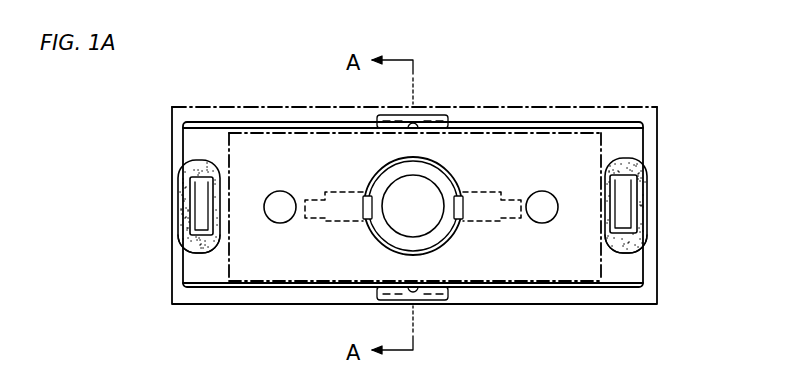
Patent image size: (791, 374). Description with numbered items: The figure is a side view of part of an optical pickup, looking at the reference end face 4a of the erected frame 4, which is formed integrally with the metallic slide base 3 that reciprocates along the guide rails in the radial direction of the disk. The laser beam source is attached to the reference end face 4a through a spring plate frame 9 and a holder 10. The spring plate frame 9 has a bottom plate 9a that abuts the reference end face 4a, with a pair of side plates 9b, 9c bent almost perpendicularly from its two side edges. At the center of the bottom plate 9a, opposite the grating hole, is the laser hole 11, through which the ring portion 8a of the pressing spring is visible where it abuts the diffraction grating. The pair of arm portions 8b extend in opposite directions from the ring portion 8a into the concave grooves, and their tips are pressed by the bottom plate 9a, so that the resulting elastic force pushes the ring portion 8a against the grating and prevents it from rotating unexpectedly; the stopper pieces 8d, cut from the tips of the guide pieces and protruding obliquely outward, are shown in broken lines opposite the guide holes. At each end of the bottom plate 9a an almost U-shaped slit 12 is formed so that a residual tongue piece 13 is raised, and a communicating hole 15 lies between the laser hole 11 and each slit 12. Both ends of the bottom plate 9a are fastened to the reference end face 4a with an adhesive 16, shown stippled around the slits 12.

The slide base 3 is at (534, 104).
The erected frame 4 is at (657, 136).
The reference end face 4a is at (645, 292).
The ring portion 8a is at (385, 246).
The arm portions 8b is at (341, 192).
The stopper pieces 8d is at (308, 200).
The spring plate frame 9 is at (272, 122).
The bottom plate 9a is at (205, 275).
The side plate 9b is at (314, 128).
The side plate 9c is at (346, 287).
The holder 10 is at (578, 267).
The laser hole 11 is at (441, 247).
The U-shaped slit 12 is at (180, 188).
The tongue piece 13 is at (213, 176).
The communicating hole 15 is at (280, 212).
The adhesive 16 is at (190, 252).